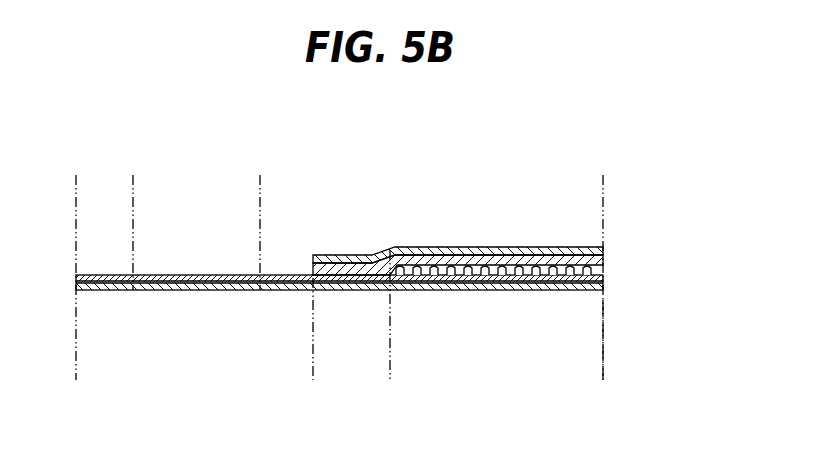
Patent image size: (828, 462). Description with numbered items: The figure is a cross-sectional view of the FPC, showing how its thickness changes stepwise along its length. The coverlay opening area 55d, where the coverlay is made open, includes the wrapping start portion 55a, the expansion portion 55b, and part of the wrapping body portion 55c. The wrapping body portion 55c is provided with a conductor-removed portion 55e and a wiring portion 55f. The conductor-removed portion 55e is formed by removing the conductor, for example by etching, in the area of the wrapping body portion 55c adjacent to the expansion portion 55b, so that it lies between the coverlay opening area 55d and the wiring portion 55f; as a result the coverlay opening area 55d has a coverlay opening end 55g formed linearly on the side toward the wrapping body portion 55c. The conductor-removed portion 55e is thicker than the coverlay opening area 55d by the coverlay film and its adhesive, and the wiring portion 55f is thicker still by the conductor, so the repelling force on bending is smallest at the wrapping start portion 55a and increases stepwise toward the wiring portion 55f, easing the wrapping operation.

The wrapping start portion 55a is at (133, 171).
The expansion portion 55b is at (133, 171).
The wrapping body portion 55c is at (603, 171).
The coverlay opening area 55d is at (76, 383).
The conductor-removed portion 55e is at (313, 383).
The wiring portion 55f is at (390, 383).
The coverlay opening end 55g is at (312, 254).